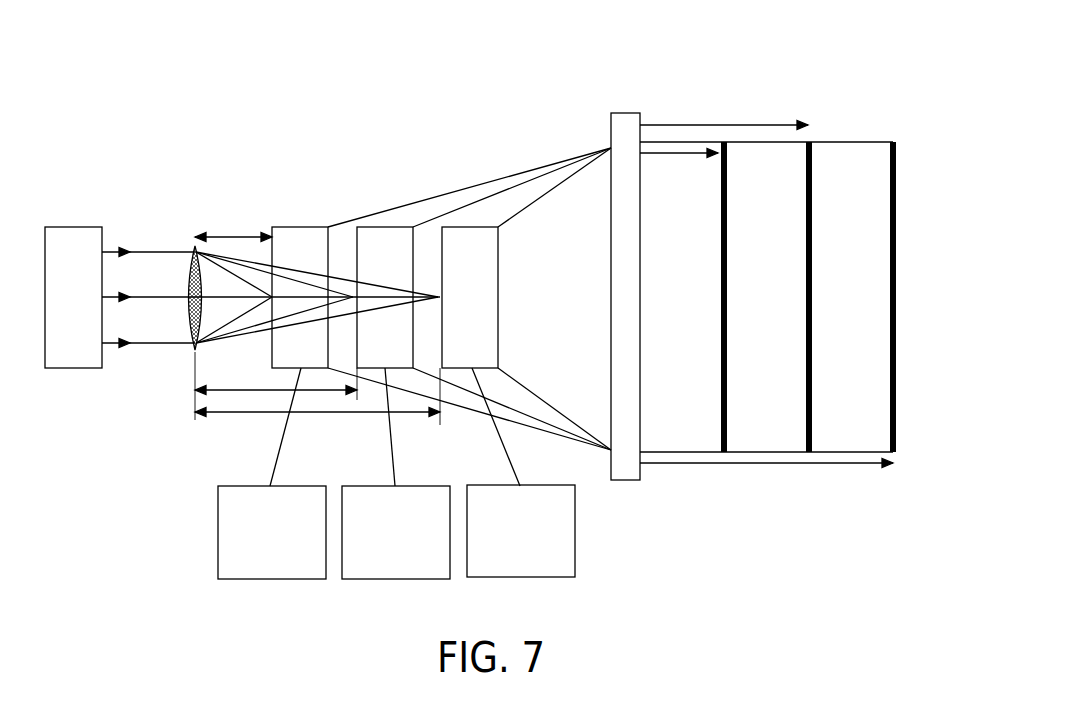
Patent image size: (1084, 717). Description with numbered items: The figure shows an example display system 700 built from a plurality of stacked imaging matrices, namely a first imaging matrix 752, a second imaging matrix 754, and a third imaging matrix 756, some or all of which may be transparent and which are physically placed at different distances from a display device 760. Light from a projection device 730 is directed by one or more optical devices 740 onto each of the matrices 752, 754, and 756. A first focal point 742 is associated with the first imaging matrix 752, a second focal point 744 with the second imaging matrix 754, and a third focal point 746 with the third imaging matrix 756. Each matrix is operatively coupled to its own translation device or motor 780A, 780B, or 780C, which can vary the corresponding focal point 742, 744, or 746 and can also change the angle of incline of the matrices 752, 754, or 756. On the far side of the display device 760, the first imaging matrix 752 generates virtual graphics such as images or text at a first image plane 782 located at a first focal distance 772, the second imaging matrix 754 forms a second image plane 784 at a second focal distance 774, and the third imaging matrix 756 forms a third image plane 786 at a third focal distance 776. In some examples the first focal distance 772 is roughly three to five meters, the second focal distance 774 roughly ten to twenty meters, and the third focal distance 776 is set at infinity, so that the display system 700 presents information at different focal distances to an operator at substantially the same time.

The display system 700 is at (208, 80).
The projection device 730 is at (75, 227).
The optical device 740 is at (192, 244).
The first focal point 742 is at (233, 232).
The second focal point 744 is at (260, 388).
The third focal point 746 is at (310, 415).
The first imaging matrix 752 is at (300, 227).
The second imaging matrix 754 is at (385, 227).
The third imaging matrix 756 is at (498, 297).
The display device 760 is at (640, 300).
The first focal distance 772 is at (687, 156).
The second focal distance 774 is at (717, 123).
The third focal distance 776 is at (770, 467).
The first image plane 782 is at (727, 240).
The second image plane 784 is at (812, 290).
The third image plane 786 is at (896, 345).
The translation device 780A is at (245, 558).
The translation device 780B is at (369, 558).
The translation device 780C is at (494, 557).